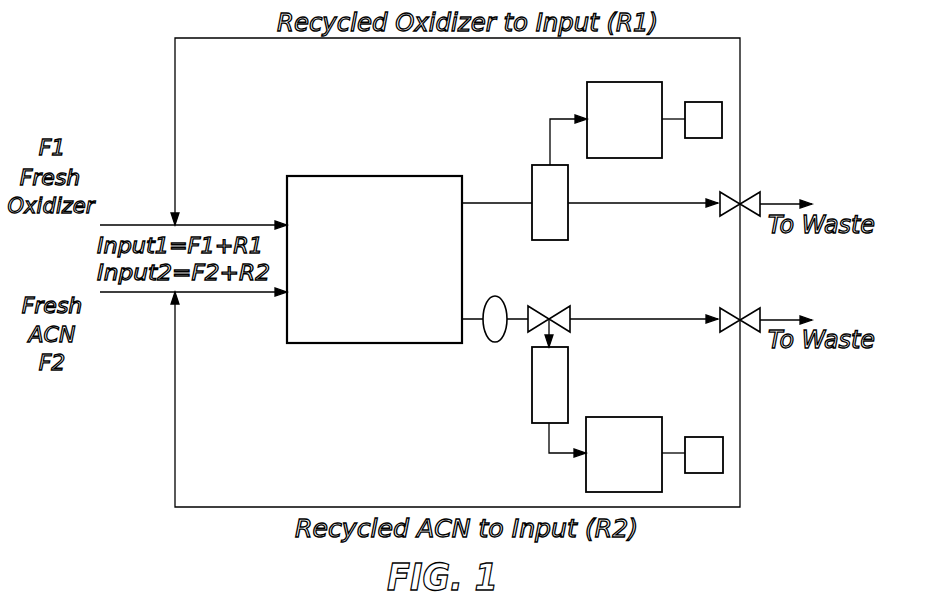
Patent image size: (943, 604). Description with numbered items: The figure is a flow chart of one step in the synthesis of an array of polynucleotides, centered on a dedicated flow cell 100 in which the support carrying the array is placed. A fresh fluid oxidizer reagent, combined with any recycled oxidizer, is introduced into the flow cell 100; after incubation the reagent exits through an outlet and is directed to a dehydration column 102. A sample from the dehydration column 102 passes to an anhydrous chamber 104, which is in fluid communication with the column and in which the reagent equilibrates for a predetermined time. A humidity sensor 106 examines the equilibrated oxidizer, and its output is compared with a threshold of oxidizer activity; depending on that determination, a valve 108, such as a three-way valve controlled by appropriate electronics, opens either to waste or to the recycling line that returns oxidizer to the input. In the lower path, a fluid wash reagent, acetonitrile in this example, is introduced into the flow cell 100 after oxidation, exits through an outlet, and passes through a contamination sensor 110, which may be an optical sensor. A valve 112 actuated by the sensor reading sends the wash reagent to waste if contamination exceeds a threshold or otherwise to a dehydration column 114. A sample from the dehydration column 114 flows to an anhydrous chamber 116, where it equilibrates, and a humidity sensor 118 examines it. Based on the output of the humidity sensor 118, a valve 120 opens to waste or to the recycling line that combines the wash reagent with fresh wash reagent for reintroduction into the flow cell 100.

The flow cell 100 is at (430, 176).
The dehydration column 102 is at (538, 165).
The anhydrous chamber 104 is at (587, 88).
The humidity sensor 106 is at (705, 102).
The valve 108 is at (746, 196).
The contamination sensor 110 is at (500, 294).
The valve 112 is at (553, 308).
The dehydration column 114 is at (570, 360).
The anhydrous chamber 116 is at (645, 417).
The humidity sensor 118 is at (705, 437).
The valve 120 is at (746, 312).